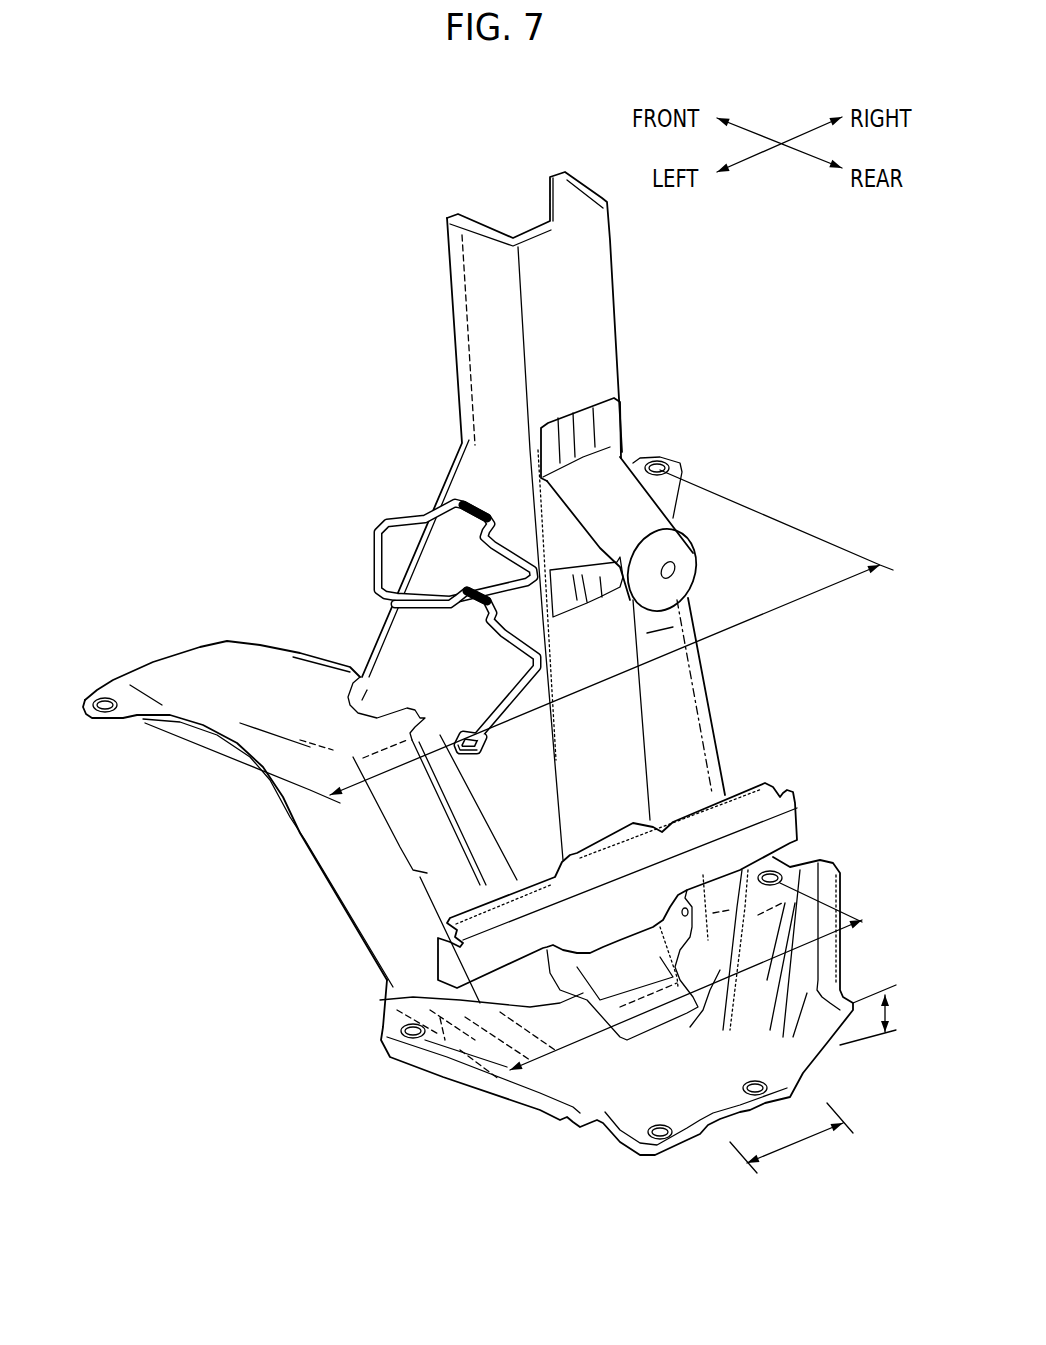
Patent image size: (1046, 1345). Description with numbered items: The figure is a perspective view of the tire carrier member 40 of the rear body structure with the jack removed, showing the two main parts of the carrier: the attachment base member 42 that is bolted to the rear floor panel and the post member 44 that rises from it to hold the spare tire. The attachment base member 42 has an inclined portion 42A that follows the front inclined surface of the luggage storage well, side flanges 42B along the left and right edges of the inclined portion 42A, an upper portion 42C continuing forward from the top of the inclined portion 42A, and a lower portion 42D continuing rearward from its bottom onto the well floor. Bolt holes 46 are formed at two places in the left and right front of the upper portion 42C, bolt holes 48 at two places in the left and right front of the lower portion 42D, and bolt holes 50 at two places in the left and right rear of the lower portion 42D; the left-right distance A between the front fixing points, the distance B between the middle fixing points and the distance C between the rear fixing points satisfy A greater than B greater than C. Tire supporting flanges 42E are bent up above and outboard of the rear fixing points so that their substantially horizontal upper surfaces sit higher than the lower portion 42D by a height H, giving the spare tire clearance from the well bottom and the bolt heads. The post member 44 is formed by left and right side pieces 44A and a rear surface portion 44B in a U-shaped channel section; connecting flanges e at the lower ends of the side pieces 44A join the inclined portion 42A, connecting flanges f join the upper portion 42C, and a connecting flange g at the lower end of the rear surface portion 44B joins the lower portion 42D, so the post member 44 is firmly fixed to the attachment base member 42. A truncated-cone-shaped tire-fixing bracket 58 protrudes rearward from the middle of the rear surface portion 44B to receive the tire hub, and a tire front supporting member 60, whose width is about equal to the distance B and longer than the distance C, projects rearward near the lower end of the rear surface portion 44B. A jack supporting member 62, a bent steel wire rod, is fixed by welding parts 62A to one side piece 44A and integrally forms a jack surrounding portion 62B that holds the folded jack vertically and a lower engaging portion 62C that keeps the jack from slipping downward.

The tire carrier member 40 is at (700, 617).
The attachment base member 42 is at (498, 872).
The inclined portion 42A is at (427, 875).
The side flanges 42B is at (317, 857).
The upper portion 42C is at (200, 703).
The lower portion 42D is at (417, 997).
The tire supporting flanges 42E is at (550, 1113).
The post member 44 is at (605, 300).
The side pieces 44A is at (563, 195).
The rear surface portion 44B is at (583, 342).
The bolt holes 46 is at (100, 697).
The bolt holes 48 is at (395, 1028).
The bolt holes 50 is at (752, 1100).
The tire-fixing bracket 58 is at (663, 527).
The tire front supporting member 60 is at (790, 833).
The jack supporting member 62 is at (413, 619).
The welding parts 62A is at (468, 596).
The jack surrounding portion 62B is at (473, 600).
The lower engaging portion 62C is at (462, 752).
The distance A is at (611, 632).
The distance B is at (643, 976).
The distance C is at (791, 1139).
The height H is at (874, 1015).
The connecting flanges e is at (684, 906).
The connecting flanges f is at (367, 695).
The connecting flange g is at (627, 1030).